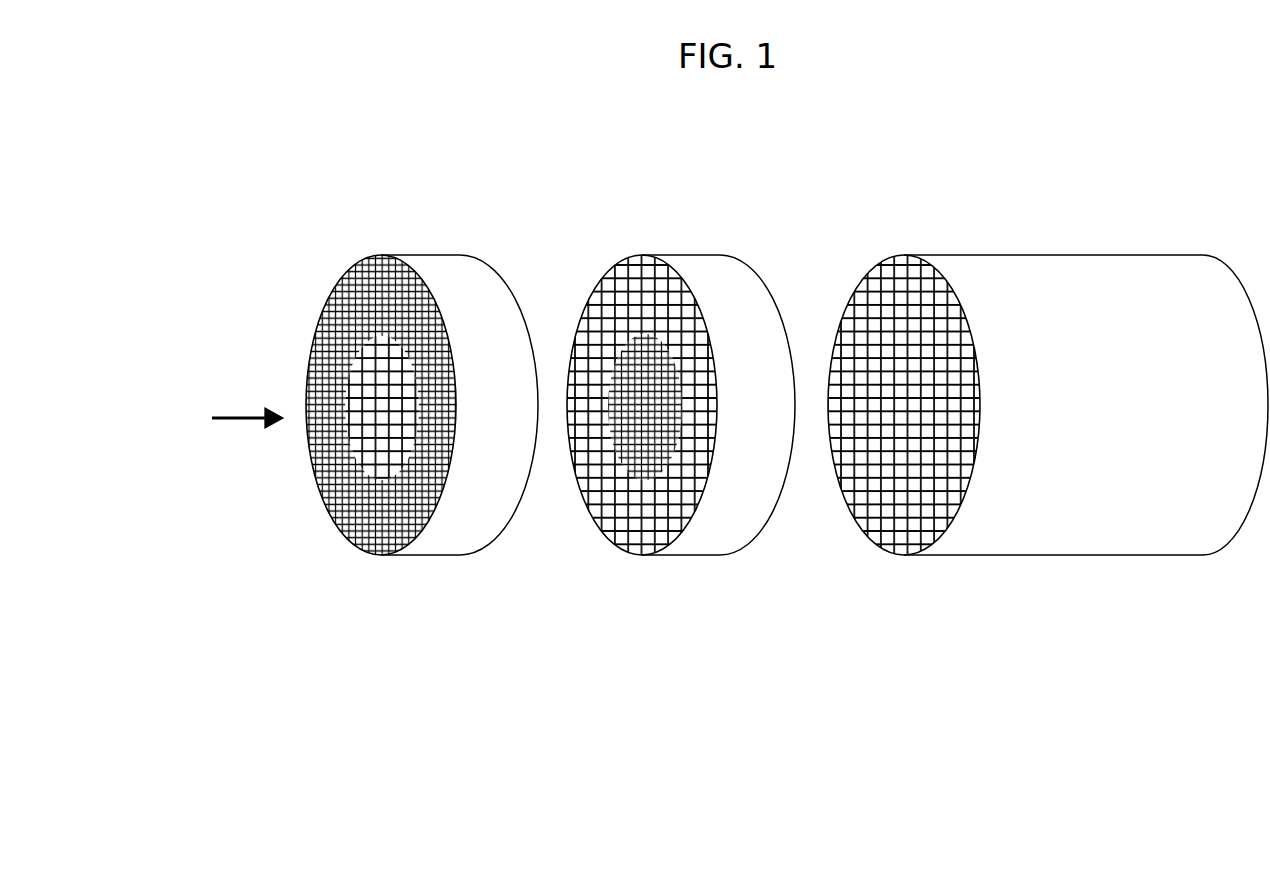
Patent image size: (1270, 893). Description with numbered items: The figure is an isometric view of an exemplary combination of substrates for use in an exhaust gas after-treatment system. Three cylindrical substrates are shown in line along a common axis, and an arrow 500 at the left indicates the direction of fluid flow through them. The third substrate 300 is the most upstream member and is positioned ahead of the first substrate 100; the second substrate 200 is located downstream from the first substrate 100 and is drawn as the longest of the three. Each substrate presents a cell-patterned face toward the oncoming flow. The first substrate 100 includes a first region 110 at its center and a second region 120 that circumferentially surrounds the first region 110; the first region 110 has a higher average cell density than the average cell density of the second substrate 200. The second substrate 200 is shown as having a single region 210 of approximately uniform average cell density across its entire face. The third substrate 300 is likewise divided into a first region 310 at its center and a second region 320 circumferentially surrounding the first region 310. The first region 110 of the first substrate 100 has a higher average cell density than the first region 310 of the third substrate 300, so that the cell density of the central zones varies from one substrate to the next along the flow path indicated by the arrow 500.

The first substrate 100 is at (647, 455).
The first region 110 is at (634, 420).
The second region 120 is at (600, 348).
The second substrate 200 is at (1026, 451).
The single region 210 is at (888, 338).
The third substrate 300 is at (382, 452).
The first region 310 is at (378, 428).
The second region 320 is at (332, 343).
The arrow 500 is at (243, 420).